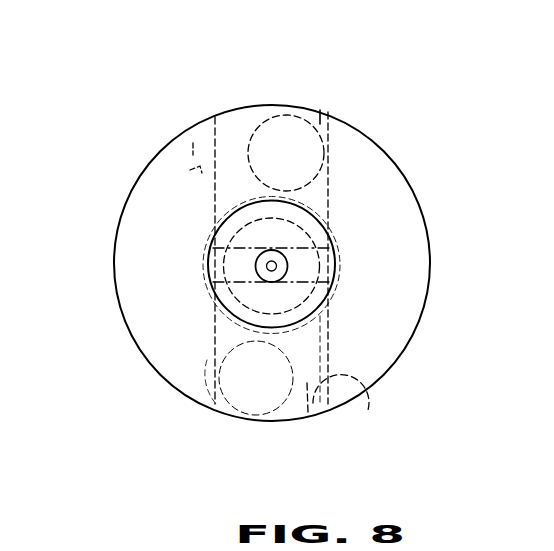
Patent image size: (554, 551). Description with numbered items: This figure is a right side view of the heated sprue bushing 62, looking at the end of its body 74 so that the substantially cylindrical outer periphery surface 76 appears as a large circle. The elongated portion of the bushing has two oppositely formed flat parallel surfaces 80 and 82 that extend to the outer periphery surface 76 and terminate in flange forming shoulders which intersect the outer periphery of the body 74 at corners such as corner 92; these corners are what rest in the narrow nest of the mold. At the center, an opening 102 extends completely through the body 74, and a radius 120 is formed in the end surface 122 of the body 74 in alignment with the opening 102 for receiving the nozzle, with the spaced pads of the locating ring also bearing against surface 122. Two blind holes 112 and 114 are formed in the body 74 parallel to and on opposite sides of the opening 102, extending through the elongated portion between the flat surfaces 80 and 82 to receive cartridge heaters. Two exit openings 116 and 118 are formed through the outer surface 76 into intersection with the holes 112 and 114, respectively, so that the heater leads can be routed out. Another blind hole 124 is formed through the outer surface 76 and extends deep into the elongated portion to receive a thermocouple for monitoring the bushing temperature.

The sprue bushing 62 is at (110, 165).
The body 74 is at (113, 248).
The outer periphery surface 76 is at (240, 110).
The flat parallel surface 80 is at (213, 352).
The flat parallel surface 82 is at (367, 413).
The corner 92 is at (26, 550).
The opening 102 is at (272, 266).
The blind hole 112 is at (250, 397).
The blind hole 114 is at (281, 158).
The exit opening 116 is at (206, 398).
The exit opening 118 is at (328, 110).
The radius 120 is at (222, 236).
The surface 122 is at (160, 180).
The blind hole 124 is at (313, 418).